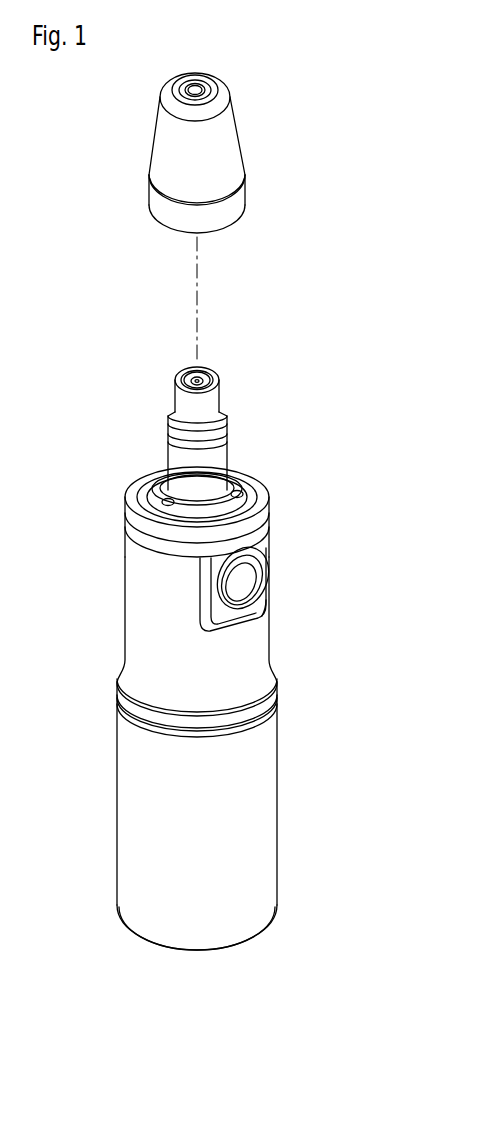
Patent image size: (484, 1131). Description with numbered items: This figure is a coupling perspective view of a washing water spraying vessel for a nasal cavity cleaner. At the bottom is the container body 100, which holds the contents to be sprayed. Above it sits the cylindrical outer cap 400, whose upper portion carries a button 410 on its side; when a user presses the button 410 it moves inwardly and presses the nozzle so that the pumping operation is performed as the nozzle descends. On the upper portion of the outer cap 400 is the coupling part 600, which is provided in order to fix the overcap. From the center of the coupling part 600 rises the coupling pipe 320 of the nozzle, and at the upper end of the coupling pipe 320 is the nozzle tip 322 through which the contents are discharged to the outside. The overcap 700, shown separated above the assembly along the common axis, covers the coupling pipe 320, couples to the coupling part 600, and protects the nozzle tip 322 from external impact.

The container body 100 is at (258, 815).
The coupling pipe 320 is at (242, 409).
The nozzle tip 322 is at (203, 377).
The outer cap 400 is at (194, 610).
The button 410 is at (252, 573).
The coupling part 600 is at (255, 512).
The overcap 700 is at (227, 148).